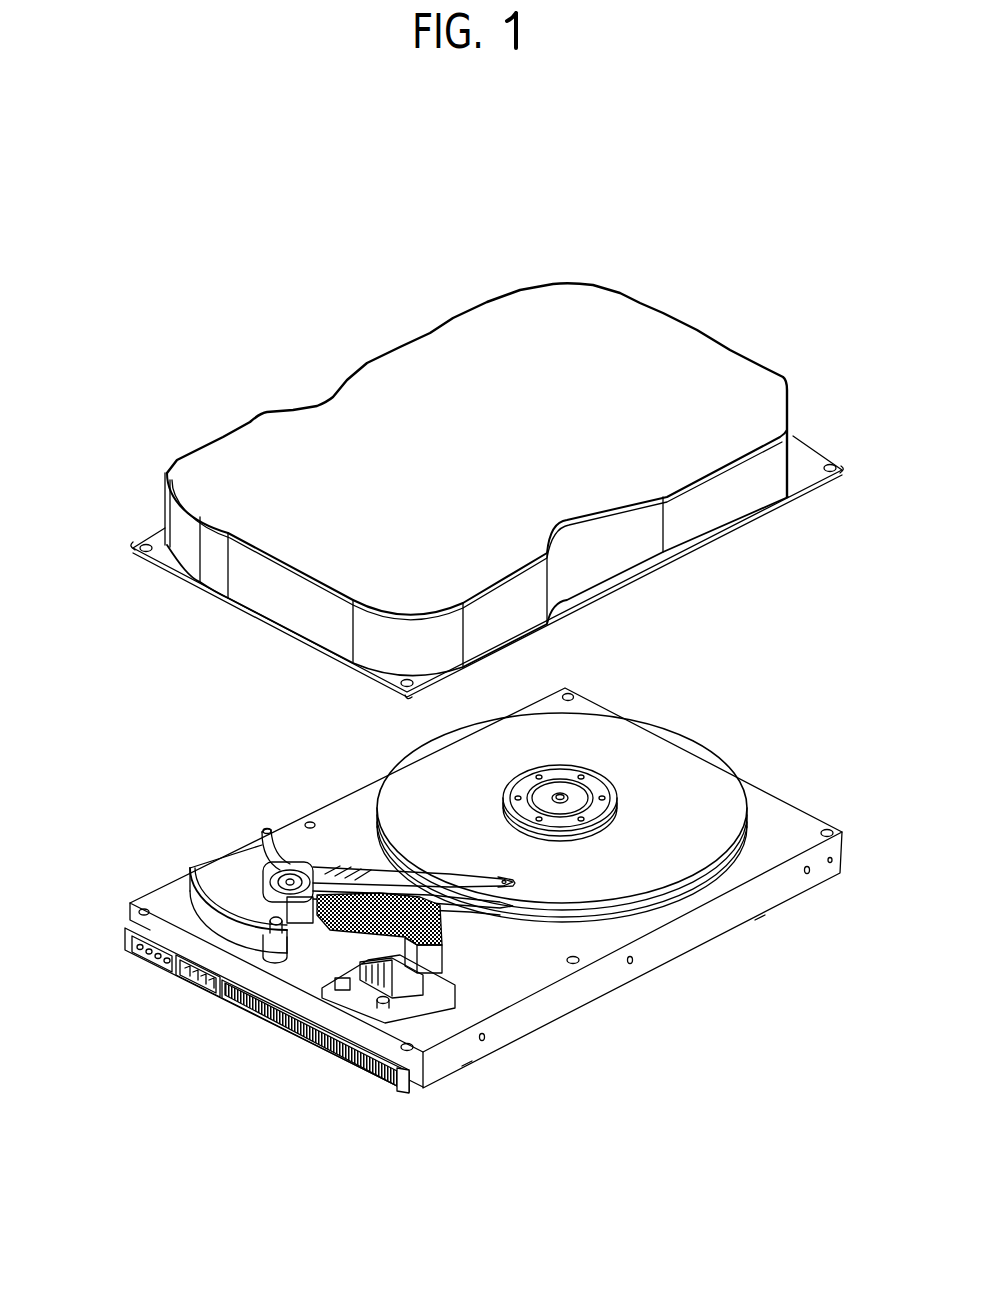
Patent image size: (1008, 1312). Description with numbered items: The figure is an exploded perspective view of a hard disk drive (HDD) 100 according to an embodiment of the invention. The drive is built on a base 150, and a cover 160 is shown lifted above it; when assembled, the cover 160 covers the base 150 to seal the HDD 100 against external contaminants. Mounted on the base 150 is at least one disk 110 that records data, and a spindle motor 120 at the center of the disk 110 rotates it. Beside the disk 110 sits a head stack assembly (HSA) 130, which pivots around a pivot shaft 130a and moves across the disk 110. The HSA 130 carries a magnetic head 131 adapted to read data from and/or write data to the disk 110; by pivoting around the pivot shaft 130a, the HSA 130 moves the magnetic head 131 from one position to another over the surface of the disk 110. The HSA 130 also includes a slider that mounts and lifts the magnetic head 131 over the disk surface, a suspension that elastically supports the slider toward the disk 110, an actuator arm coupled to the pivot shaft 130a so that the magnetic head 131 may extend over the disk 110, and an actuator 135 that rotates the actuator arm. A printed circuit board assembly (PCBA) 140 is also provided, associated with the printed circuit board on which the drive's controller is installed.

The hard disk drive 100 is at (152, 701).
The disk 110 is at (723, 802).
The spindle motor 120 is at (605, 785).
The head stack assembly 130 is at (358, 840).
The pivot shaft 130a is at (277, 866).
The magnetic head 131 is at (513, 886).
The actuator 135 is at (232, 900).
The printed circuit board assembly 140 is at (388, 1095).
The base 150 is at (787, 835).
The cover 160 is at (720, 354).